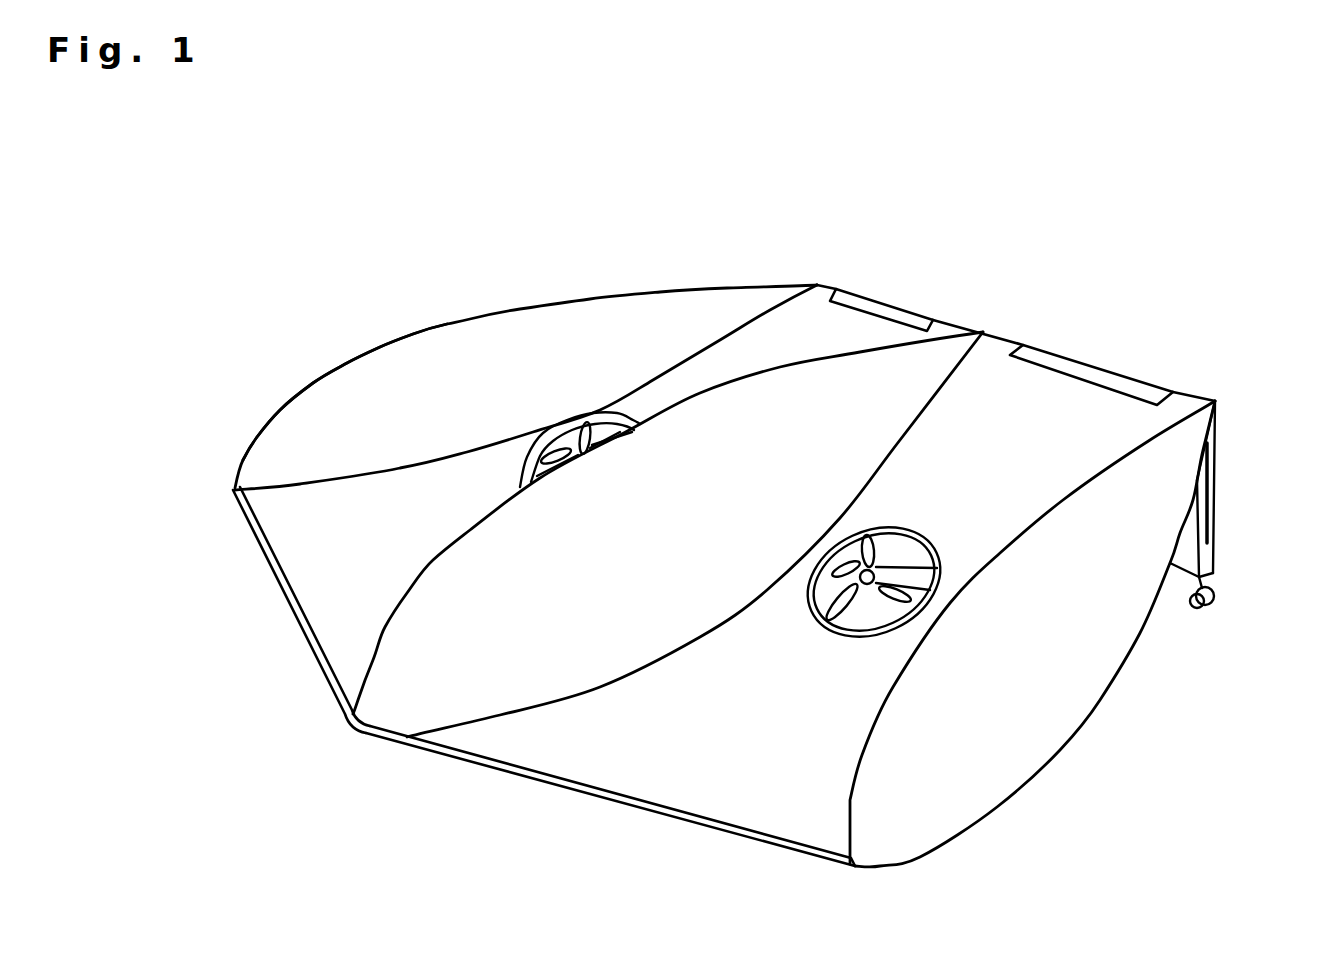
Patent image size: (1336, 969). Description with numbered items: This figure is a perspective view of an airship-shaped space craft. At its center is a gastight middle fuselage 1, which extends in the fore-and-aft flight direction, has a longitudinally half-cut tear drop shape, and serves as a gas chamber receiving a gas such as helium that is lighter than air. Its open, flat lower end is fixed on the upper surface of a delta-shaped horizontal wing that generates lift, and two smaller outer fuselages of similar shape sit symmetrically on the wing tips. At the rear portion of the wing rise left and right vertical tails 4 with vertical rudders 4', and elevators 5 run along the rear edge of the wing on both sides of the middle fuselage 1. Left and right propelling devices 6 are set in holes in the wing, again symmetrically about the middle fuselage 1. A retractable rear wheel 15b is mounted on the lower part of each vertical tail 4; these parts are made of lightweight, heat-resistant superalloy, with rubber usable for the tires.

The middle fuselage 1 is at (440, 683).
The vertical tail 4 is at (1249, 494).
The vertical rudder 4' is at (1251, 438).
The elevator 5 is at (913, 313).
The propelling device 6 is at (863, 613).
The rear wheel 15b is at (1213, 600).